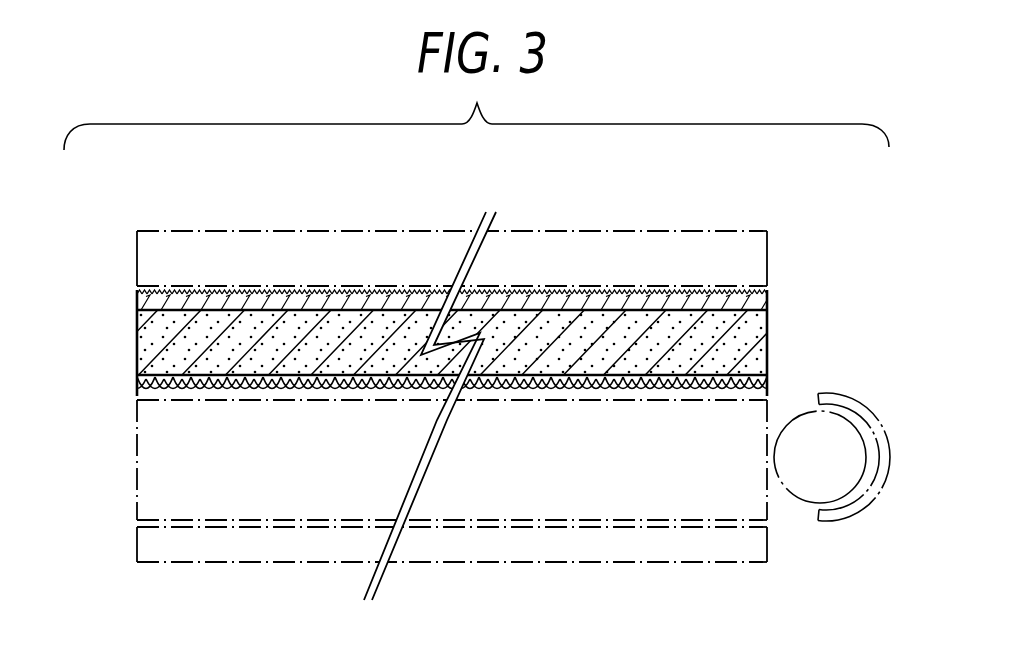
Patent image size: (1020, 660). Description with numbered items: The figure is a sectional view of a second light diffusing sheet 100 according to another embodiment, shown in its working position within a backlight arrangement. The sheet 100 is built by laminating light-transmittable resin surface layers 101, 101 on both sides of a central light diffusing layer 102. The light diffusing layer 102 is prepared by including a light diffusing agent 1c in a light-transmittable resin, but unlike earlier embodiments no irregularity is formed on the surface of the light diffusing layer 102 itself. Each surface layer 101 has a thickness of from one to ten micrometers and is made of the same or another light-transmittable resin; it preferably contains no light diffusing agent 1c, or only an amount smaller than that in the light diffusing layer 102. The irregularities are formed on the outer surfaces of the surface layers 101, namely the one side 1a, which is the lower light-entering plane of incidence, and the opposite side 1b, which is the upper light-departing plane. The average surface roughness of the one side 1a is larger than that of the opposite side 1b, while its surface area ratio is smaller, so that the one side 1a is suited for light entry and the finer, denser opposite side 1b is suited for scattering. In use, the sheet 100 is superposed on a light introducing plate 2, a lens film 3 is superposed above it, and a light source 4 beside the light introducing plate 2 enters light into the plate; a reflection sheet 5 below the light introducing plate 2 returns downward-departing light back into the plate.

The lens film 3 is at (137, 262).
The light-transmittable resin surface layer 101 is at (404, 401).
The light diffusing layer 102 is at (415, 276).
The light diffusing sheet 100 is at (468, 401).
The one side 1a is at (575, 393).
The opposite side 1b is at (568, 291).
The light diffusing agent 1c is at (678, 328).
The light introducing plate 2 is at (137, 459).
The reflection sheet 5 is at (137, 544).
The light source 4 is at (795, 416).